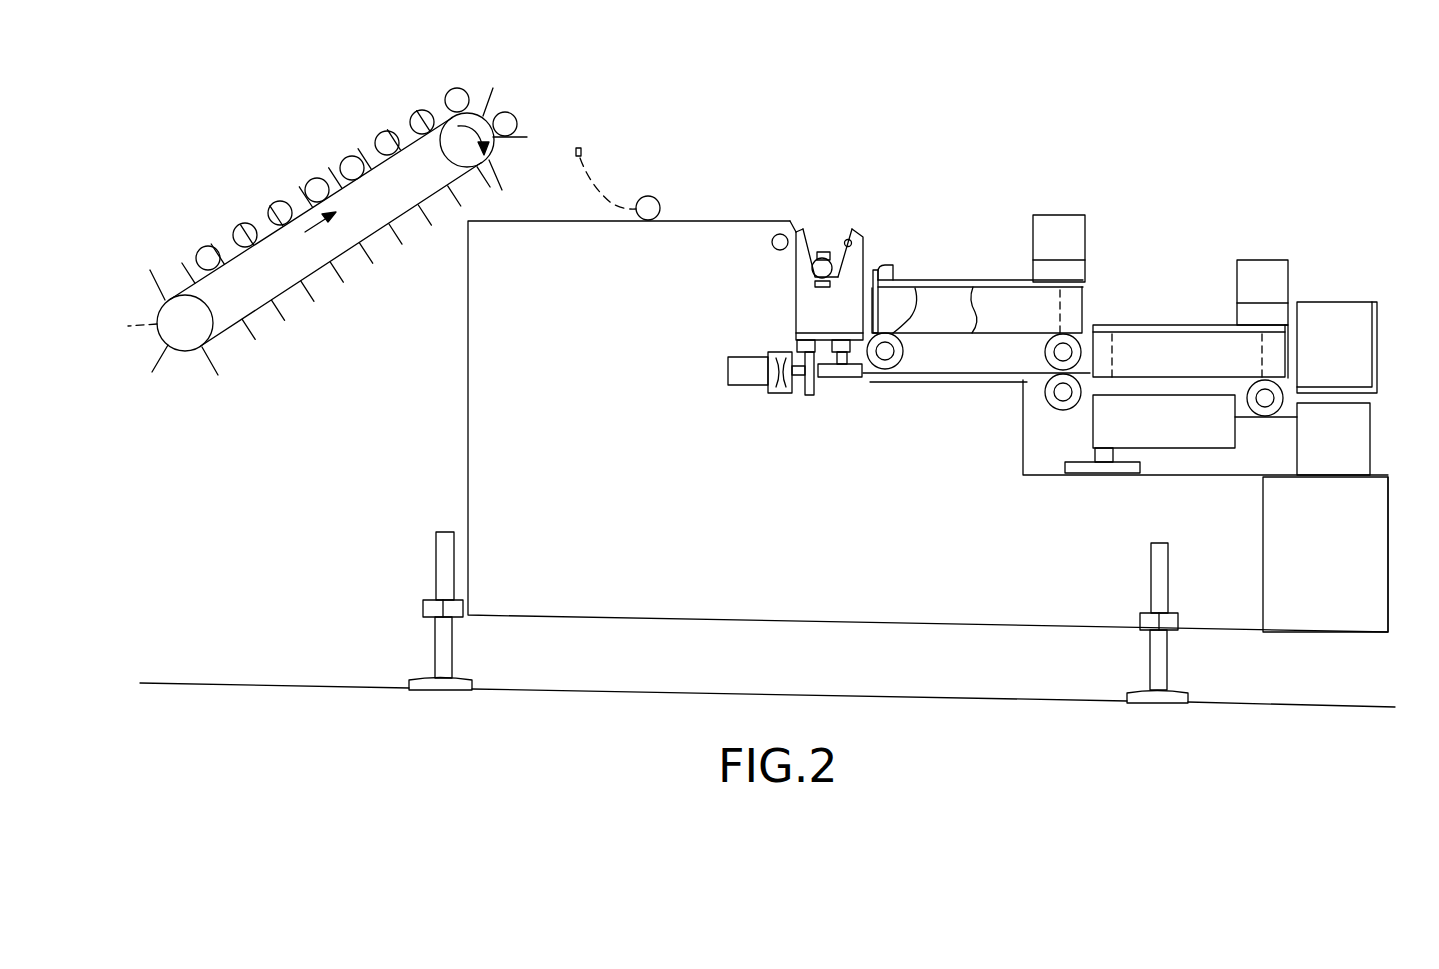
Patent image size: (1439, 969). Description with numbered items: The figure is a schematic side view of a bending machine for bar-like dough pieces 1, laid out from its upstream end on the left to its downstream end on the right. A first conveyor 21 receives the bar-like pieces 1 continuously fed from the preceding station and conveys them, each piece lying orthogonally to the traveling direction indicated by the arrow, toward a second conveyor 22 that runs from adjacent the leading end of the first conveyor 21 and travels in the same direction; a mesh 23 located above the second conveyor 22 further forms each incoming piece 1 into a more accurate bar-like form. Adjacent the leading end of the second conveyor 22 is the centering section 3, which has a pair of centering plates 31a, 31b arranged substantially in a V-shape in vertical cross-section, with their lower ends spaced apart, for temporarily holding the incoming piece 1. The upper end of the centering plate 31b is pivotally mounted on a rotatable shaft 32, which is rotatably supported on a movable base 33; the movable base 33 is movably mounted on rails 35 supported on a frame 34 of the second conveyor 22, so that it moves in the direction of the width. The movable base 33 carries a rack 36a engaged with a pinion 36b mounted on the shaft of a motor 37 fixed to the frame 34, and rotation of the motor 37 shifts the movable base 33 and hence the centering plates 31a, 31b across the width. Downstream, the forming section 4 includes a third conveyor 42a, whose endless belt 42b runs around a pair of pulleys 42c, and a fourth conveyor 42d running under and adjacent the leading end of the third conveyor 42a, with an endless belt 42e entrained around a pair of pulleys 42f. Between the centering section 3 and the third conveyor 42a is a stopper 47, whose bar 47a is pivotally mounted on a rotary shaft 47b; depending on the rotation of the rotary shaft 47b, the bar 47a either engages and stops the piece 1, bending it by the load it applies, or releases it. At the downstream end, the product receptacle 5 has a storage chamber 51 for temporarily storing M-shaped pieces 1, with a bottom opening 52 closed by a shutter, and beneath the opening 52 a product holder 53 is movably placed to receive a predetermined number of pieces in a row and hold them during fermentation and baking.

The bar-like dough piece 1 is at (311, 181).
The first conveyor 21 is at (438, 92).
The second conveyor 22 is at (556, 228).
The mesh 23 is at (602, 168).
The centering section 3 is at (827, 247).
The centering plate 31a is at (803, 250).
The centering plate 31b is at (838, 232).
The rotatable shaft 32 is at (851, 241).
The movable base 33 is at (804, 320).
The frame 34 is at (848, 378).
The rails 35 is at (840, 365).
The rack 36a is at (812, 396).
The pinion 36b is at (803, 398).
The motor 37 is at (729, 377).
The forming section 4 is at (1125, 345).
The third conveyor 42a is at (1002, 362).
The endless belt 42b is at (957, 374).
The pulleys 42c is at (1082, 338).
The fourth conveyor 42d is at (1242, 422).
The endless belt 42e is at (1068, 413).
The pulleys 42f is at (1095, 398).
The stopper 47 is at (977, 290).
The bar 47a is at (918, 310).
The rotary shaft 47b is at (892, 262).
The product receptacle 5 is at (1365, 363).
The storage chamber 51 is at (1312, 310).
The bottom opening 52 is at (1380, 333).
The product holder 53 is at (1363, 418).